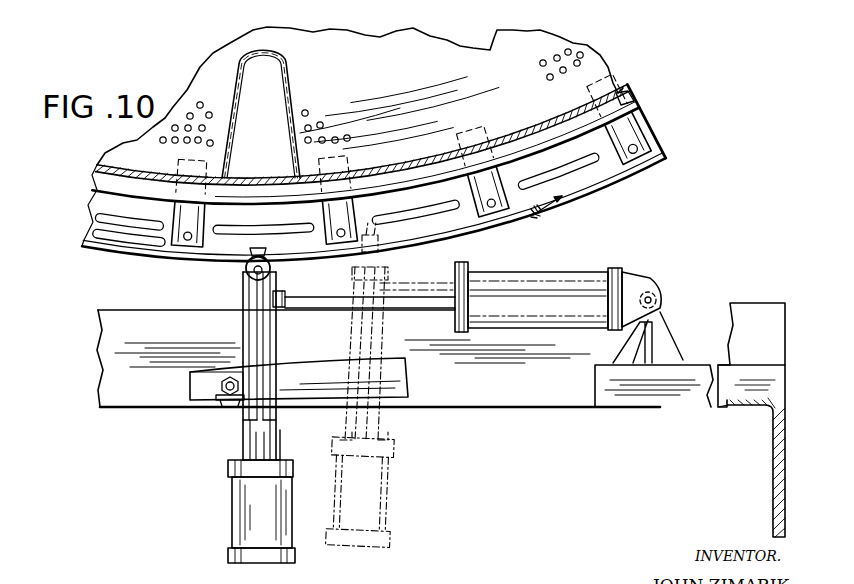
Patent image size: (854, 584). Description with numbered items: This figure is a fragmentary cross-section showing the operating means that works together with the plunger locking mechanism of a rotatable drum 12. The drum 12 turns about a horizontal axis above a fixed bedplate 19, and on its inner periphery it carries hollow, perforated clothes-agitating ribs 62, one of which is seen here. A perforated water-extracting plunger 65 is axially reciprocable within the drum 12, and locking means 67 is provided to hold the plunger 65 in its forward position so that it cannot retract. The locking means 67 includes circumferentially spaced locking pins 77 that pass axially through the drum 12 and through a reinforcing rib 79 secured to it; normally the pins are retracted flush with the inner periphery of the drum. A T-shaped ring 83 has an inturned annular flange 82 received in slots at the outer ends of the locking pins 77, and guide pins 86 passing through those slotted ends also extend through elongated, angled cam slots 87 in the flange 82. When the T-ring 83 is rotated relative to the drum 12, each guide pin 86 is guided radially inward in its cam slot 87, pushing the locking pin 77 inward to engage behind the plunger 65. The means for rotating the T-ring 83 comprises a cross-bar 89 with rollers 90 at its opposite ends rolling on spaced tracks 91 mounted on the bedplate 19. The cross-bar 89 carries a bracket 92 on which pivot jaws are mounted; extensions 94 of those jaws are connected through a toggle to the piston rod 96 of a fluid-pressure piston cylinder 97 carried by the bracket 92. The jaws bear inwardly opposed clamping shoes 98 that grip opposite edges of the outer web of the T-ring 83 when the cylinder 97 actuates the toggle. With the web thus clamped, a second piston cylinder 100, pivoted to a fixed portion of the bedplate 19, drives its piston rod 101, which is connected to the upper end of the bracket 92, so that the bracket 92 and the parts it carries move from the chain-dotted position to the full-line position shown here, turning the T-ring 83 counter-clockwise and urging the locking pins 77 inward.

The drum 12 is at (540, 114).
The bedplate 19 is at (788, 460).
The clothes-agitating rib 62 is at (292, 108).
The water-extracting plunger 65 is at (493, 52).
The locking means 67 is at (590, 190).
The locking pin 77 is at (493, 137).
The reinforcing rib 79 is at (613, 100).
The inturned annular flange 82 is at (600, 172).
The T-shaped ring 83 is at (660, 130).
The guide pin 86 is at (637, 150).
The cam slot 87 is at (453, 214).
The cross-bar 89 is at (222, 386).
The roller 90 is at (212, 394).
The track 91 is at (388, 400).
The bracket 92 is at (245, 443).
The jaw extension 94 is at (265, 282).
The piston rod 96 is at (262, 443).
The piston cylinder 97 is at (245, 518).
The clamping shoe 98 is at (248, 278).
The piston cylinder 100 is at (590, 282).
The piston rod 101 is at (289, 306).